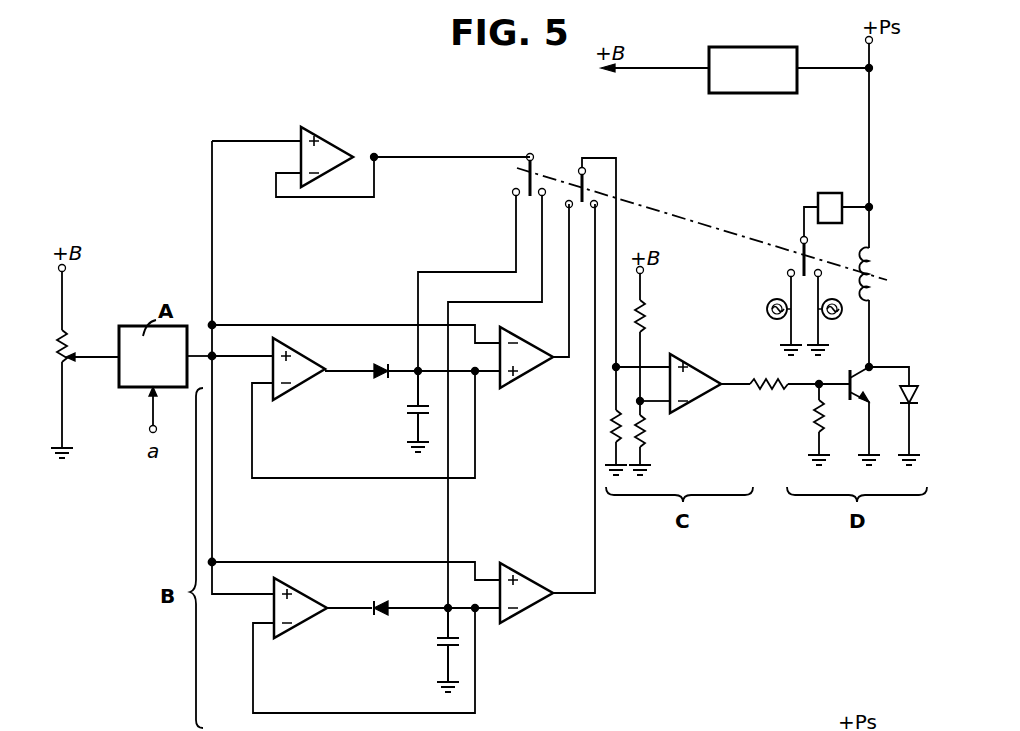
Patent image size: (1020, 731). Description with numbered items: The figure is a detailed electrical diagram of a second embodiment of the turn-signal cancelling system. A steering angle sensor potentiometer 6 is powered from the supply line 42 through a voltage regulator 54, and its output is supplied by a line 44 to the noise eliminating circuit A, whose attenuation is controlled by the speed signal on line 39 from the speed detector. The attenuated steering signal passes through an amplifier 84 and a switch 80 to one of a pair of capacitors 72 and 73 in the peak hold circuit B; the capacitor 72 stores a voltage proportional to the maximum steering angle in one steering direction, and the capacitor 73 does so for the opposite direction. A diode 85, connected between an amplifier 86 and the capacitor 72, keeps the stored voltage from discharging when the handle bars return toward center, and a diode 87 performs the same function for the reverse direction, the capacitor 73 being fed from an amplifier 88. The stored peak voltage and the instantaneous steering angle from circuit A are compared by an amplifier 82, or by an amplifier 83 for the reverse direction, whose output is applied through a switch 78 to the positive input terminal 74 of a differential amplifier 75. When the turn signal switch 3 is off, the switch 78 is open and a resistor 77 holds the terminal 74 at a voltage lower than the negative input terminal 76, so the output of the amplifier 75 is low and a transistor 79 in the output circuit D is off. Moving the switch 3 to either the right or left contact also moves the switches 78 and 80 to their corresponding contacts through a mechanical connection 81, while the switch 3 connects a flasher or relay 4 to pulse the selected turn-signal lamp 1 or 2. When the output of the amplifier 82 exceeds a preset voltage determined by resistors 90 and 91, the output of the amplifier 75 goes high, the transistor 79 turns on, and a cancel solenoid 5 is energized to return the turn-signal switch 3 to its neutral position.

The turn-signal lamp 1 is at (767, 300).
The turn-signal lamp 2 is at (834, 320).
The turn signal switch 3 is at (798, 256).
The flasher or relay 4 is at (826, 193).
The cancel solenoid 5 is at (878, 262).
The steering angle sensor potentiometer 6 is at (54, 358).
The speed signal line 39 is at (150, 410).
The power supply line 42 is at (872, 188).
The line 44 is at (92, 342).
The voltage regulator 54 is at (750, 95).
The capacitor 72 is at (405, 411).
The capacitor 73 is at (437, 642).
The positive input terminal 74 is at (656, 366).
The differential amplifier 75 is at (686, 372).
The negative input terminal 76 is at (662, 406).
The resistor 77 is at (608, 436).
The switch 78 is at (590, 184).
The transistor 79 is at (852, 394).
The switch 80 is at (536, 165).
The mechanical connection 81 is at (689, 219).
The amplifier 82 is at (524, 378).
The amplifier 83 is at (530, 580).
The amplifier 84 is at (333, 146).
The diode 85 is at (452, 272).
The amplifier 86 is at (312, 364).
The diode 87 is at (384, 601).
The amplifier 88 is at (300, 598).
The resistor 90 is at (648, 312).
The resistor 91 is at (652, 438).